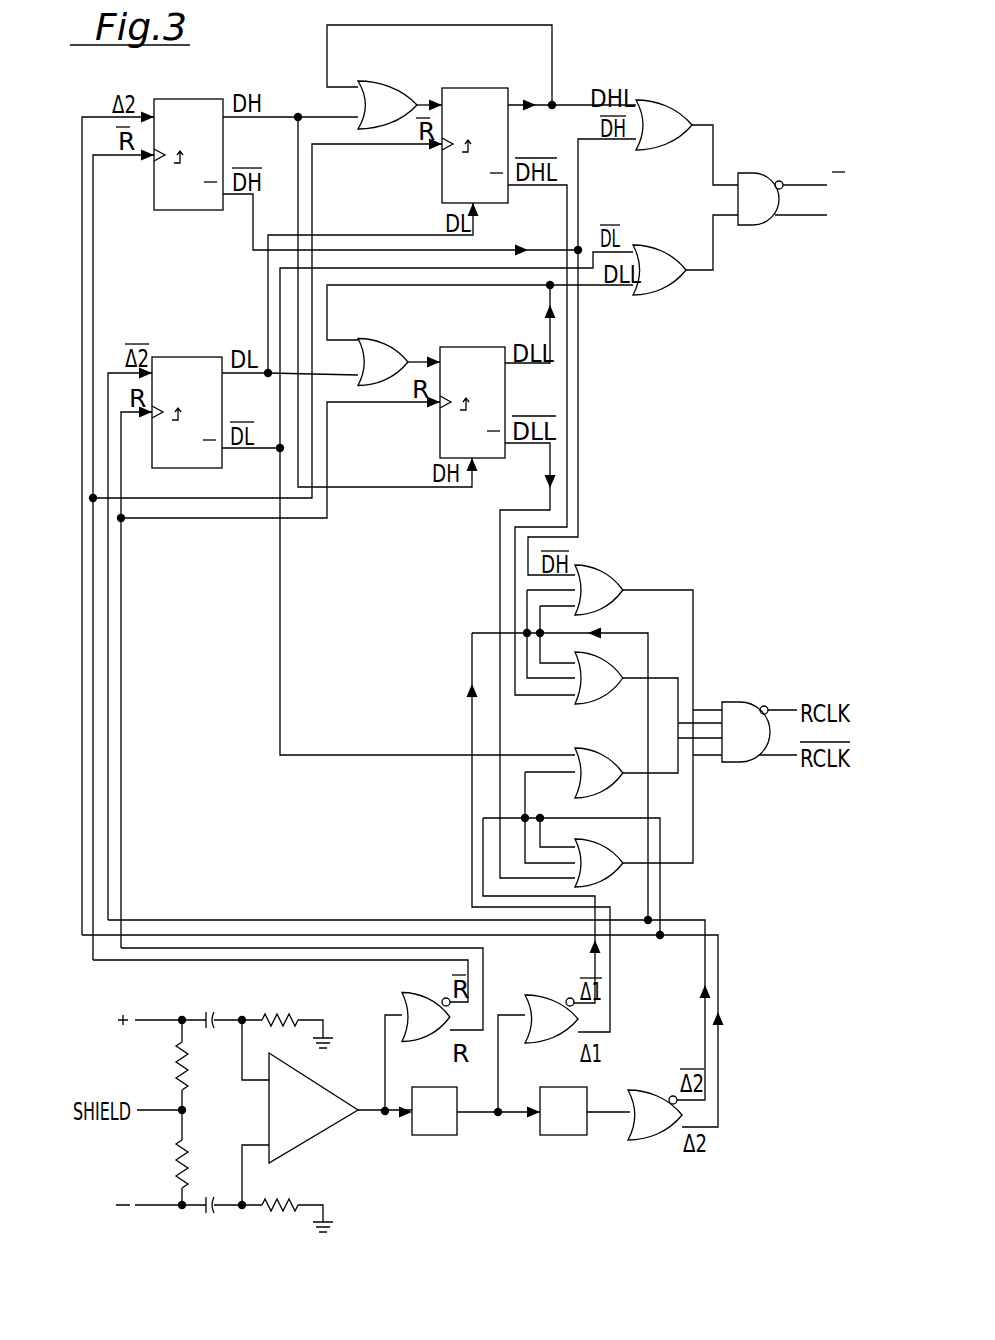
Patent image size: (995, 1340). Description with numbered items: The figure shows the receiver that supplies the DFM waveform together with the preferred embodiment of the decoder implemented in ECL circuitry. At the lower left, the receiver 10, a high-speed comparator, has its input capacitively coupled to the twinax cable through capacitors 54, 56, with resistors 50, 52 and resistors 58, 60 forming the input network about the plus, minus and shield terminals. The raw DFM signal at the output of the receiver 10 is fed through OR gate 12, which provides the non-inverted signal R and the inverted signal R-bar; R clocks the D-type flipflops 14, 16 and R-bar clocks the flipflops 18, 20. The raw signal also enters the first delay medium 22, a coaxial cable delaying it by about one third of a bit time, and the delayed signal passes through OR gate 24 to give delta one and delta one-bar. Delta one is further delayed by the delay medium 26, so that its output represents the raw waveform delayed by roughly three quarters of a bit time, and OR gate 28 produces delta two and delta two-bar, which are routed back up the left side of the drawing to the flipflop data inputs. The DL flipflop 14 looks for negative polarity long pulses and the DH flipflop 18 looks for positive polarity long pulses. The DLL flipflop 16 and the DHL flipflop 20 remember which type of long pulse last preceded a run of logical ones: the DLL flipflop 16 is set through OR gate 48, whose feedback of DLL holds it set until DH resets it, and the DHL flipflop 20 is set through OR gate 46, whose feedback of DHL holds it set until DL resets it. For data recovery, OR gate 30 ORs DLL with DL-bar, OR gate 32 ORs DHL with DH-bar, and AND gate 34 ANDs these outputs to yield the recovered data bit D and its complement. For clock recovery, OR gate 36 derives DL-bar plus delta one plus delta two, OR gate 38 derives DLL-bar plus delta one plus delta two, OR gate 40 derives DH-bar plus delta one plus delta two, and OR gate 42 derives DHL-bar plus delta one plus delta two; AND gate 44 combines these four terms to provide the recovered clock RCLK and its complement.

The receiver 10 is at (328, 1135).
The OR gate 12 is at (403, 996).
The DL flipflop 14 is at (190, 357).
The DLL flipflop 16 is at (470, 350).
The DH flipflop 18 is at (200, 210).
The DHL flipflop 20 is at (479, 98).
The first delay medium 22 is at (438, 1135).
The OR gate 24 is at (533, 998).
The delay medium 26 is at (567, 1135).
The OR gate 28 is at (655, 1140).
The OR gate 30 is at (670, 292).
The OR gate 32 is at (668, 104).
The AND gate 34 is at (758, 225).
The OR gate 36 is at (587, 750).
The OR gate 38 is at (608, 858).
The OR gate 40 is at (612, 585).
The OR gate 42 is at (606, 688).
The AND gate 44 is at (744, 762).
The OR gate 46 is at (385, 91).
The OR gate 48 is at (386, 342).
The resistor 50 is at (276, 1010).
The resistor 52 is at (280, 1225).
The capacitor 54 is at (211, 1010).
The capacitor 56 is at (217, 1224).
The resistor 58 is at (175, 1068).
The resistor 60 is at (176, 1160).